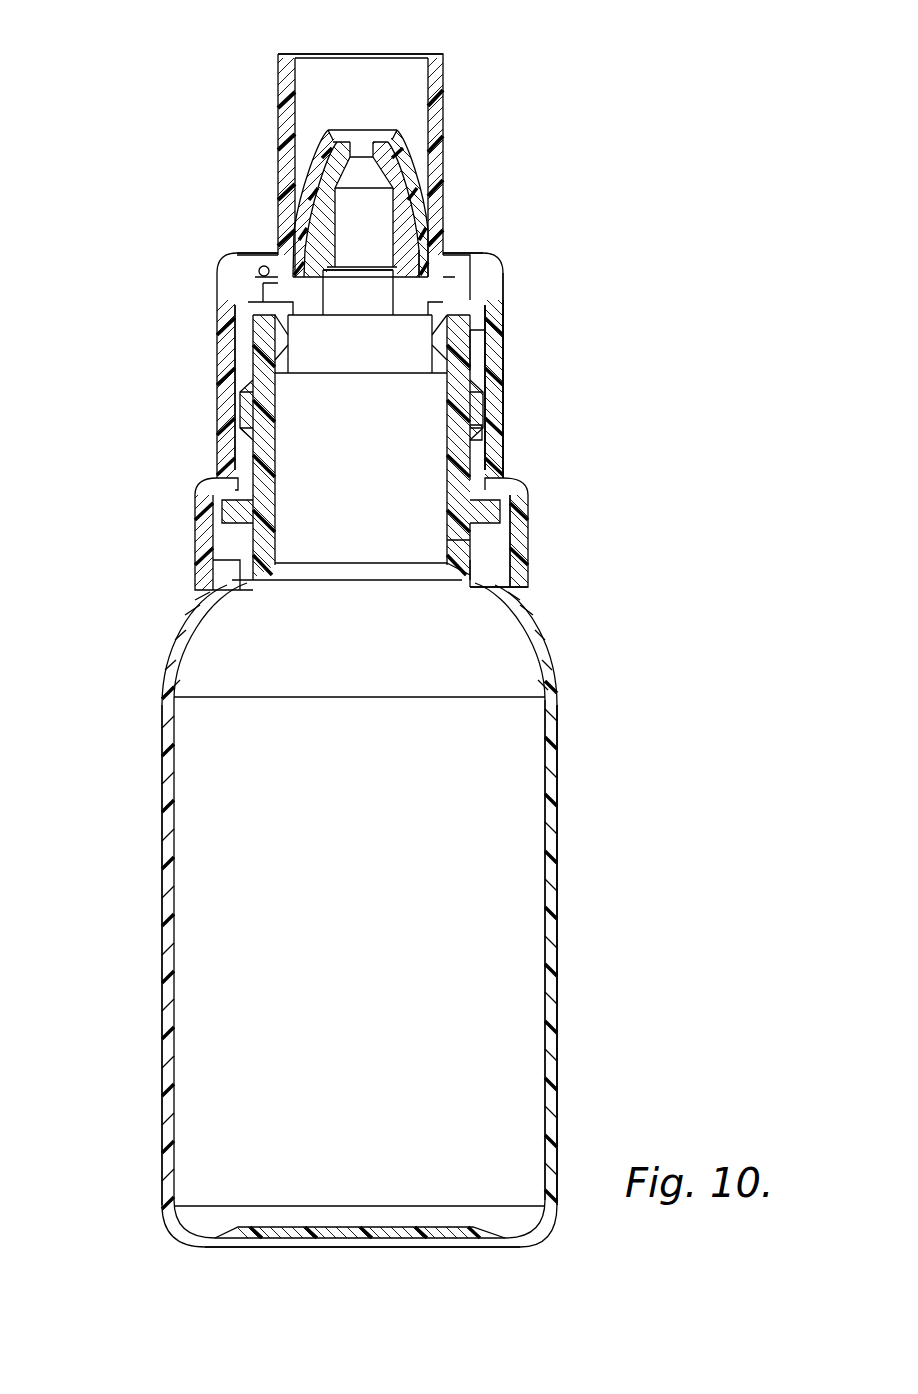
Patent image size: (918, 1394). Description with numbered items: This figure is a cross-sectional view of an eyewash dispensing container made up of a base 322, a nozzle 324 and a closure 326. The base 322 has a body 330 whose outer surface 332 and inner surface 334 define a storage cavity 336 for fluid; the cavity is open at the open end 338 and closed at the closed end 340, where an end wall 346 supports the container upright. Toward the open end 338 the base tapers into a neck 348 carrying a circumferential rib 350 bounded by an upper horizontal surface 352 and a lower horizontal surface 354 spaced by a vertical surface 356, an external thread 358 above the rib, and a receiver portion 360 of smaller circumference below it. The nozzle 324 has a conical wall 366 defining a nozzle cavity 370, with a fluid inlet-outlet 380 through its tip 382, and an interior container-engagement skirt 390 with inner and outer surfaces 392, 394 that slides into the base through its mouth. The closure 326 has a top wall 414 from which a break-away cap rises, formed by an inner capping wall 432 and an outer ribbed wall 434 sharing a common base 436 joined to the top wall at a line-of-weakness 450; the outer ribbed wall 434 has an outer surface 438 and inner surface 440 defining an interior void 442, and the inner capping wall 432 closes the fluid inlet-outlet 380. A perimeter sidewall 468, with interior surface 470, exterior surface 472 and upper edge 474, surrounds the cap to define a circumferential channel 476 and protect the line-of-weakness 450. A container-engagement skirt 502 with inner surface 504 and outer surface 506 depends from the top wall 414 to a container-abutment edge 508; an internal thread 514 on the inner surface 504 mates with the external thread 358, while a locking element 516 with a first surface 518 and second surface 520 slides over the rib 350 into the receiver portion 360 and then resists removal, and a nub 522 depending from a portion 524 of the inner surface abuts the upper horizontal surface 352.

The open end 338 is at (328, 42).
The inner surface 440 is at (300, 58).
The interior void 442 is at (400, 65).
The outer surface 438 is at (444, 82).
The tip 382 is at (343, 145).
The fluid inlet-outlet 380 is at (357, 146).
The inner capping wall 432 is at (312, 172).
The outer ribbed wall 434 is at (277, 182).
The conical wall 366 is at (400, 190).
The line-of-weakness 450 is at (283, 272).
The common base 436 is at (430, 236).
The circumferential channel 476 is at (458, 270).
The upper edge 474 is at (280, 270).
The exterior surface 472 is at (490, 258).
The interior surface 470 is at (276, 280).
The perimeter sidewall 468 is at (503, 284).
The outer surface 394 is at (268, 330).
The top wall 414 is at (500, 288).
The neck 348 is at (474, 326).
The closure 326 is at (214, 364).
The inner surface 504 is at (478, 357).
The outer surface 506 is at (503, 372).
The external thread 358 is at (241, 432).
The container-engagement skirt 502 is at (506, 400).
The inner surface 392 is at (290, 352).
The internal thread 514 is at (478, 430).
The interior container-engagement skirt 390 is at (431, 359).
The nozzle 324 is at (353, 362).
The upper horizontal surface 352 is at (513, 486).
The nub 522 is at (212, 503).
The portion 524 is at (500, 506).
The second surface 520 is at (214, 510).
The locking element 516 is at (188, 540).
The circumferential rib 350 is at (500, 515).
The lower horizontal surface 354 is at (468, 558).
The first surface 518 is at (223, 565).
The vertical surface 356 is at (510, 535).
The receiver portion 360 is at (230, 570).
The container-abutment edge 508 is at (505, 586).
The storage cavity 336 is at (517, 739).
The base 322 is at (567, 796).
The body 330 is at (567, 860).
The outer surface 332 is at (556, 979).
The inner surface 334 is at (537, 1068).
The closed end 340 is at (220, 1262).
The end wall 346 is at (510, 1255).
The nozzle cavity 370 is at (356, 272).